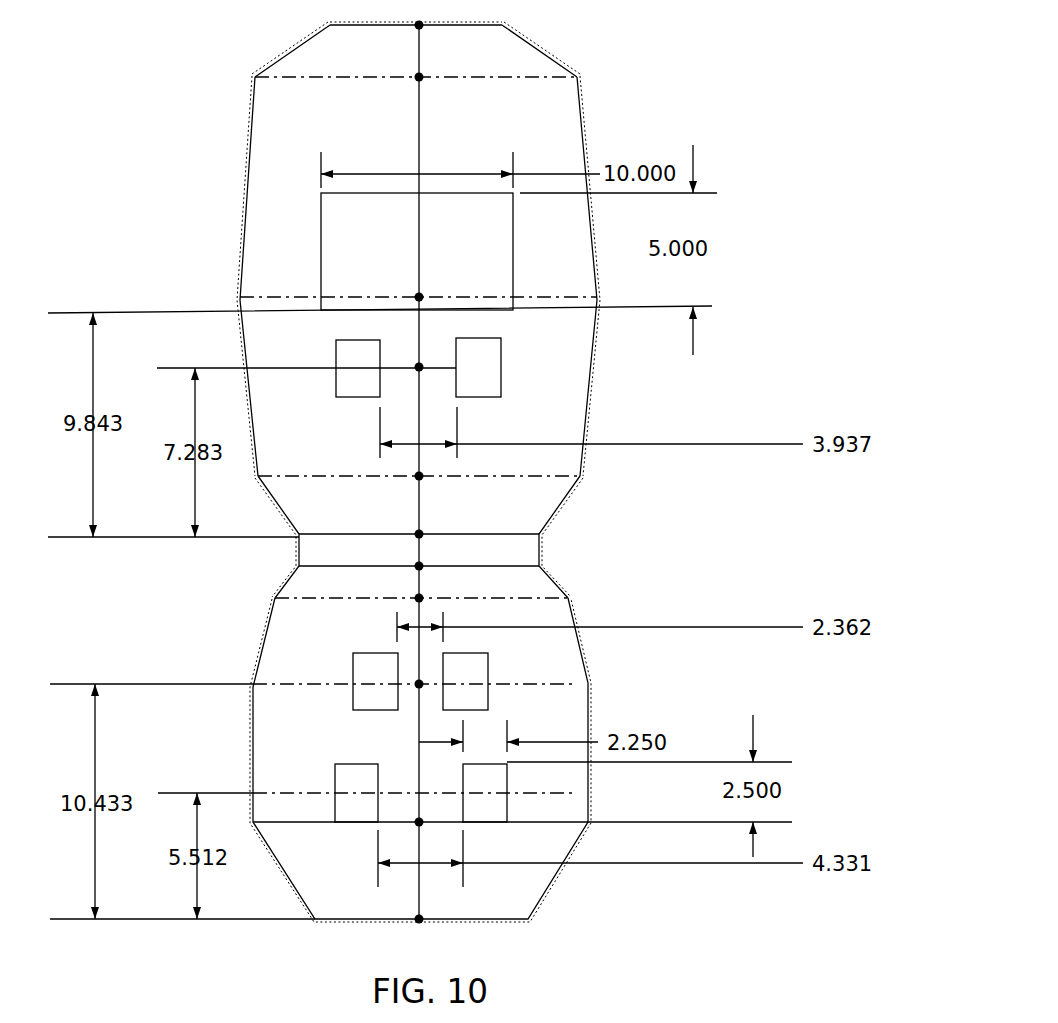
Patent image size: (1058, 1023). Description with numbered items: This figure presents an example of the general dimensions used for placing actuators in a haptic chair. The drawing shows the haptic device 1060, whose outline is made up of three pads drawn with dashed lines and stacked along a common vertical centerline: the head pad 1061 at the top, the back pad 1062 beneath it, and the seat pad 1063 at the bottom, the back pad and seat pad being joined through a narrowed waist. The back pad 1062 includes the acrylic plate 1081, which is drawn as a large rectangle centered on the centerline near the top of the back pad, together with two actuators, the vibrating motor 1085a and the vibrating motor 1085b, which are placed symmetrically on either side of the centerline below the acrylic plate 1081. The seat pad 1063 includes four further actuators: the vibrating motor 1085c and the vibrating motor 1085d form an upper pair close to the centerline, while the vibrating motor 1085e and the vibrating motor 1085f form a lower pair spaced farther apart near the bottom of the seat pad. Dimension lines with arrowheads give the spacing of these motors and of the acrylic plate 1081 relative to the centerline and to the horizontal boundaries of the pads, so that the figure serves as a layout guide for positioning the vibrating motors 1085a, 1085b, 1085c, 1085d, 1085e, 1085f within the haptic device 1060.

The haptic device 1060 is at (496, 472).
The head pad 1061 is at (393, 63).
The back pad 1062 is at (335, 119).
The seat pad 1063 is at (350, 633).
The acrylic plate 1081 is at (398, 262).
The vibrating motor 1085a is at (326, 360).
The vibrating motor 1085b is at (514, 370).
The vibrating motor 1085c is at (342, 665).
The vibrating motor 1085d is at (500, 663).
The vibrating motor 1085e is at (324, 779).
The vibrating motor 1085f is at (520, 791).